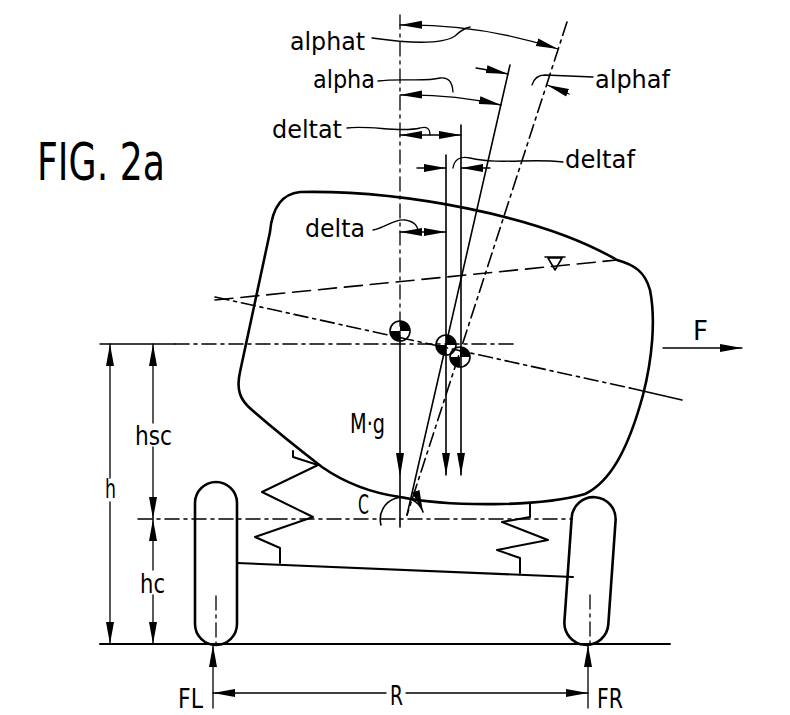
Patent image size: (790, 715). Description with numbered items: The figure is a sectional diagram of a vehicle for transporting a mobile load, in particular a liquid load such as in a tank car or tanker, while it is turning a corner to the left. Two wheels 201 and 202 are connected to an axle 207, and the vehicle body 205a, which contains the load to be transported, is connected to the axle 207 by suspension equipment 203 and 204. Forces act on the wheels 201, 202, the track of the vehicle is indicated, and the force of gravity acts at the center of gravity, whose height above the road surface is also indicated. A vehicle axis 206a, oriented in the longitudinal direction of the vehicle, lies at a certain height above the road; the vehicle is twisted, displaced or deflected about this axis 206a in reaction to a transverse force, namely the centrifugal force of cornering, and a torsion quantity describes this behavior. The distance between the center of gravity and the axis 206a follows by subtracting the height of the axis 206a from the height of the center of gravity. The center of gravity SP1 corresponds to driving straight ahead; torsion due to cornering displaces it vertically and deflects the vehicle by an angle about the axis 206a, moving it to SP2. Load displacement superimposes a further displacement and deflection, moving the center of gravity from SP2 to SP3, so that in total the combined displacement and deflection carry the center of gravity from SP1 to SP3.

The wheel 201 is at (237, 608).
The wheel 202 is at (598, 597).
The suspension equipment 203 is at (283, 483).
The suspension equipment 204 is at (540, 562).
The vehicle body 205a is at (607, 457).
The vehicle axis 206a is at (400, 520).
The axle 207 is at (443, 575).
The center of gravity SP1 is at (392, 336).
The center of gravity SP2 is at (441, 352).
The center of gravity SP3 is at (468, 353).